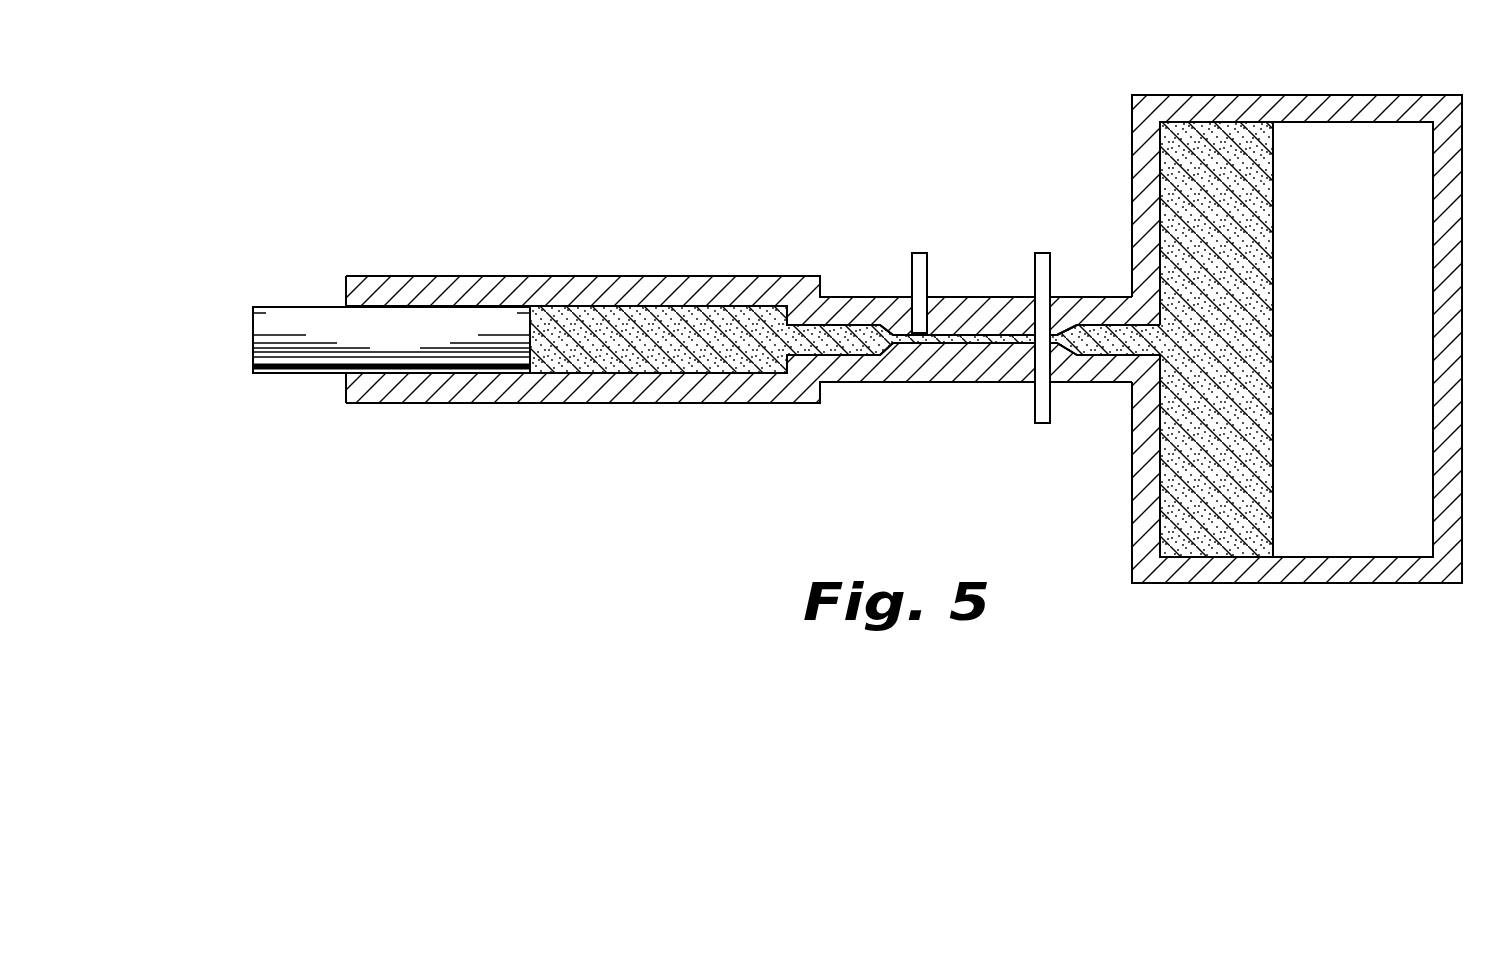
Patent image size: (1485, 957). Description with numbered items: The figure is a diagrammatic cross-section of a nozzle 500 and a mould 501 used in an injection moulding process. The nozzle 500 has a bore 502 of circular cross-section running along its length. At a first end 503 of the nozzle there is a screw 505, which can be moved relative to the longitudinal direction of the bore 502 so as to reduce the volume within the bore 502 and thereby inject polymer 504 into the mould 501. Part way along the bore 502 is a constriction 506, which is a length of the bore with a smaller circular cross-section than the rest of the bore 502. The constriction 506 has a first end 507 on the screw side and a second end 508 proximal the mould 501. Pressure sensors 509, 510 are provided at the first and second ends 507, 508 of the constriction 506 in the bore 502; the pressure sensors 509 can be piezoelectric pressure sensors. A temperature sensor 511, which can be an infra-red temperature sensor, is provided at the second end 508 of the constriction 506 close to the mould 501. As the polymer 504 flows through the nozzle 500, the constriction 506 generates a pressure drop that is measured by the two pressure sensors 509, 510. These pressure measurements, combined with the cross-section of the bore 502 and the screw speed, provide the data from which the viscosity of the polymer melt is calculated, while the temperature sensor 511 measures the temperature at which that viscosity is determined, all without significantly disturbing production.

The nozzle 500 is at (855, 334).
The mould 501 is at (1197, 103).
The bore 502 is at (672, 308).
The first end 503 is at (352, 278).
The polymer 504 is at (692, 350).
The screw 505 is at (288, 305).
The constriction 506 is at (967, 340).
The first end of the constriction 507 is at (890, 337).
The second end of the constriction 508 is at (1060, 330).
The pressure sensor 509 is at (922, 255).
The pressure sensor 510 is at (1037, 255).
The temperature sensor 511 is at (1035, 425).